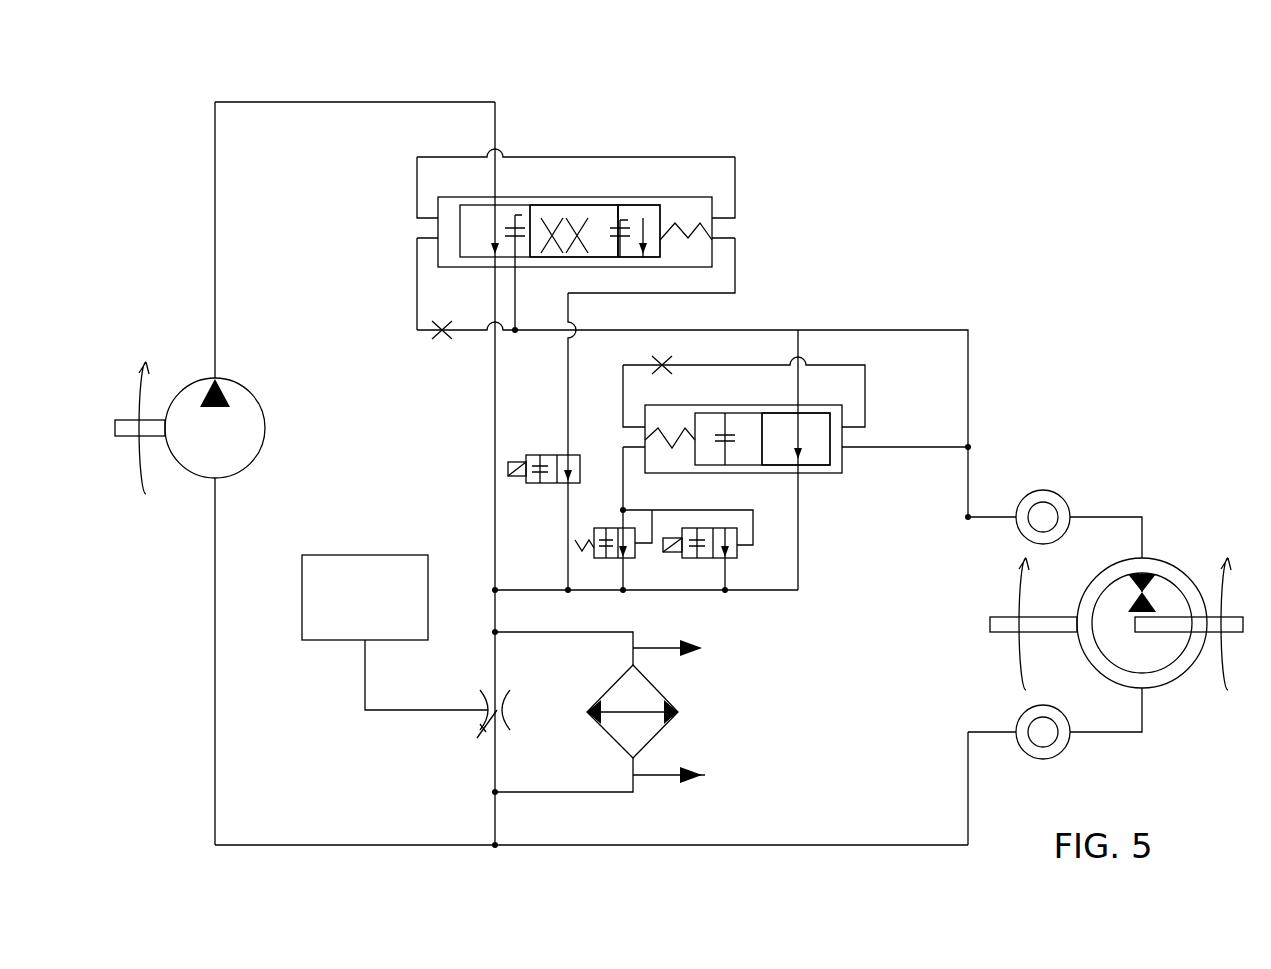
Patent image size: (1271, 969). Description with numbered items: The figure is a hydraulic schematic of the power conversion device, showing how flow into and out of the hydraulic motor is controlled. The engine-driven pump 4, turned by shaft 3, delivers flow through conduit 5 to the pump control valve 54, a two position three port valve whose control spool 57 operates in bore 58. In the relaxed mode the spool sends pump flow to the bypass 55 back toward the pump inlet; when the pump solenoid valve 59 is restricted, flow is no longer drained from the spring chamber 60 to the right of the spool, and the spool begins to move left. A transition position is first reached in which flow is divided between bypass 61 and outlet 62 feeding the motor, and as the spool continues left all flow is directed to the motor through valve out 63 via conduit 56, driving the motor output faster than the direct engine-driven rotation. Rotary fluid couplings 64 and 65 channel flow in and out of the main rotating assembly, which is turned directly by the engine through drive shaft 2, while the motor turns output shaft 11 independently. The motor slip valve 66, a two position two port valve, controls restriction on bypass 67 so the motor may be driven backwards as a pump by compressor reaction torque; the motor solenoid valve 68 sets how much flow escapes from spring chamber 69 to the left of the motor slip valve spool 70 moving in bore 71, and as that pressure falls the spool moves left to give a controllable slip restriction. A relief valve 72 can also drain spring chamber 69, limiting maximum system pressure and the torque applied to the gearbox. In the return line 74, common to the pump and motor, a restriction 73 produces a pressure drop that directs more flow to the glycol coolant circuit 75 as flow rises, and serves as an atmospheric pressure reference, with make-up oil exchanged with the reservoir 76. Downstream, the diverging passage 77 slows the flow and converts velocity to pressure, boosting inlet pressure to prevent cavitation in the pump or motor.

The drive shaft 2 is at (1036, 632).
The shaft 3 is at (118, 440).
The pump 4 is at (262, 400).
The conduit 5 is at (352, 102).
The output shaft 11 is at (1238, 632).
The pump control valve 54 is at (604, 264).
The bypass 55 is at (490, 380).
The conduit 56 is at (933, 330).
The control spool 57 is at (612, 206).
The bore 58 is at (690, 197).
The pump solenoid valve 59 is at (522, 460).
The spring chamber 60 is at (713, 238).
The bypass 61 is at (544, 255).
The outlet 62 is at (578, 255).
The valve out 63 is at (645, 256).
The rotary fluid coupling 64 is at (1060, 497).
The rotary fluid coupling 65 is at (1060, 752).
The motor slip valve 66 is at (762, 492).
The bypass 67 is at (772, 590).
The motor solenoid valve 68 is at (738, 556).
The spring chamber 69 is at (668, 443).
The motor slip valve spool 70 is at (746, 442).
The bore 71 is at (808, 475).
The relief valve 72 is at (640, 558).
The restriction 73 is at (487, 718).
The return line 74 is at (495, 652).
The glycol coolant circuit 75 is at (655, 730).
The reservoir 76 is at (312, 578).
The diverging passage 77 is at (486, 730).